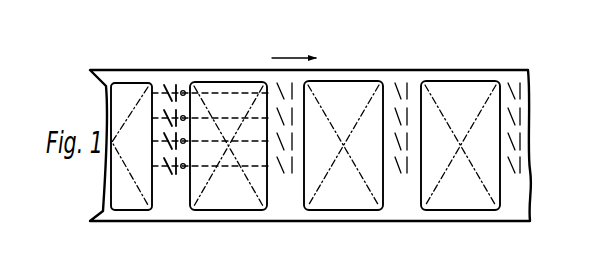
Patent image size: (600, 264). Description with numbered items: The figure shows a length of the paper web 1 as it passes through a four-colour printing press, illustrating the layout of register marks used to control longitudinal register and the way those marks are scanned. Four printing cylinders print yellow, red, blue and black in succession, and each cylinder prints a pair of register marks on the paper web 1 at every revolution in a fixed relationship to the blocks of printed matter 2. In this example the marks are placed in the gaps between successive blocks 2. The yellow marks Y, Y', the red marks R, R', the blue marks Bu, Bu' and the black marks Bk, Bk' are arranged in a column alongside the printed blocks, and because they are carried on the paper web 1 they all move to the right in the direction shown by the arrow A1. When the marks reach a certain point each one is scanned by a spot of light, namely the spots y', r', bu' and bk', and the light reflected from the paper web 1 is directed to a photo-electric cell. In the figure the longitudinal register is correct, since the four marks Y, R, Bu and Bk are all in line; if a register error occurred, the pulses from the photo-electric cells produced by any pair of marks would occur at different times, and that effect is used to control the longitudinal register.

The paper web 1 is at (474, 70).
The blocks of printed matter 2 is at (250, 81).
The arrow A1 is at (294, 50).
The yellow register mark Y' is at (157, 74).
The yellow register mark Y is at (175, 74).
The spot of light y' is at (196, 71).
The red register mark R' is at (144, 109).
The red register mark R is at (207, 87).
The spot of light r' is at (205, 108).
The blue register mark Bu' is at (146, 139).
The blue register mark Bu is at (196, 137).
The spot of light bu' is at (201, 152).
The black register mark Bk' is at (140, 183).
The black register mark Bk is at (172, 182).
The spot of light bk' is at (208, 182).